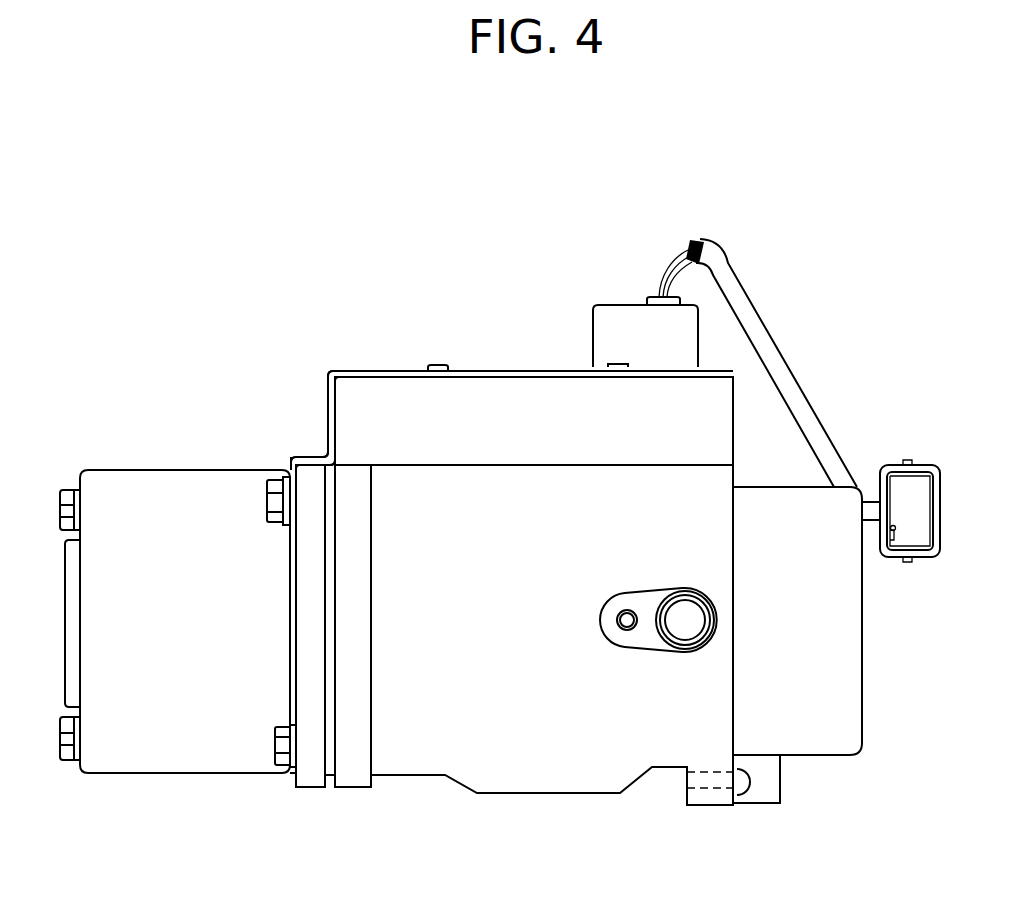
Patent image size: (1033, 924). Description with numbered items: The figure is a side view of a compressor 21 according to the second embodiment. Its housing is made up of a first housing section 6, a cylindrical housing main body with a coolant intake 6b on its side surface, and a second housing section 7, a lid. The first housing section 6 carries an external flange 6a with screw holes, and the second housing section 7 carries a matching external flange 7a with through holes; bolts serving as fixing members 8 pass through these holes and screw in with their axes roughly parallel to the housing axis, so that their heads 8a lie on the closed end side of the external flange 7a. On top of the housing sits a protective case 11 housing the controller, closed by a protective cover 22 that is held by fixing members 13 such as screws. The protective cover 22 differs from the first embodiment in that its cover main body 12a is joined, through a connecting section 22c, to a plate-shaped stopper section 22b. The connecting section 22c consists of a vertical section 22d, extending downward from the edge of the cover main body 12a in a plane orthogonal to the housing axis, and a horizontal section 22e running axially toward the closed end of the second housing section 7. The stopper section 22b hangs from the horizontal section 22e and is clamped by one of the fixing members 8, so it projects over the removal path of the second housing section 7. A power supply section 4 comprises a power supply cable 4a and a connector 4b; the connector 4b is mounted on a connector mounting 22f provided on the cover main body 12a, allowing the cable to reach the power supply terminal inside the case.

The power supply section 4 is at (825, 162).
The power supply cable 4a is at (767, 312).
The connector 4b is at (625, 317).
The first housing section 6 is at (528, 760).
The external flange 6a is at (353, 775).
The coolant intake 6b is at (692, 620).
The second housing section 7 is at (165, 705).
The external flange 7a is at (310, 773).
The fixing member 8 is at (258, 548).
The head 8a is at (265, 500).
The protective case 11 is at (547, 375).
The cover main body 12a is at (390, 370).
The fixing member 13 is at (435, 365).
The compressor 21 is at (515, 266).
The protective cover 22 is at (466, 332).
The stopper section 22b is at (283, 463).
The connecting section 22c is at (340, 297).
The vertical section 22d is at (303, 452).
The horizontal section 22e is at (288, 478).
The connector mounting 22f is at (700, 367).